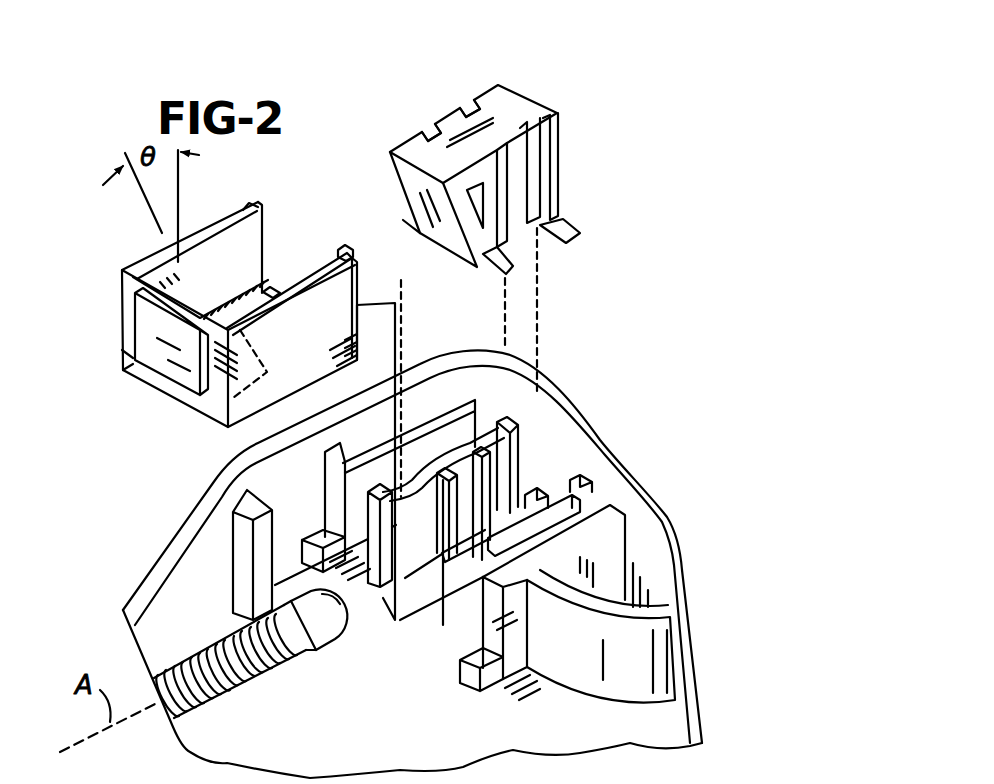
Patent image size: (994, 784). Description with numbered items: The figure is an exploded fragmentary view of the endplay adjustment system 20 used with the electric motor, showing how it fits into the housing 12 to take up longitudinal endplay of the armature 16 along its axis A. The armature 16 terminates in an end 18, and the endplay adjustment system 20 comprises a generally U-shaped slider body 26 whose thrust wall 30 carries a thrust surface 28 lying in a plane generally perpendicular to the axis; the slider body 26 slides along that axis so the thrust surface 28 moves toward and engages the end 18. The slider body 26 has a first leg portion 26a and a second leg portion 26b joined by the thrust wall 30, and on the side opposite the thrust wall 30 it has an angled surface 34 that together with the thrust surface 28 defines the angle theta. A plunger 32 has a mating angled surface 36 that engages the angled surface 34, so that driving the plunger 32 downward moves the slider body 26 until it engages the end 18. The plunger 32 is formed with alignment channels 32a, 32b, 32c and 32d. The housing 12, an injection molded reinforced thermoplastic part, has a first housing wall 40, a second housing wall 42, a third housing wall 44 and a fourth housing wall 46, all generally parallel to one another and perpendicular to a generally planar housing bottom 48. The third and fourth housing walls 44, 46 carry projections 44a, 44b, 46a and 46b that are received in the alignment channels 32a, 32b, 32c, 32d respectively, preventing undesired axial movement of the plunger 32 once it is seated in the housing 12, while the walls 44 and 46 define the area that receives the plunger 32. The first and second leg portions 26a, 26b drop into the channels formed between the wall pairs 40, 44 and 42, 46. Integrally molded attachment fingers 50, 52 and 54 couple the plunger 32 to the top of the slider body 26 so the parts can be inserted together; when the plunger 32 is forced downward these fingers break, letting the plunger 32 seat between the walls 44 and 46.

The housing 12 is at (683, 573).
The armature 16 is at (212, 660).
The end 18 is at (326, 634).
The endplay adjustment system 20 is at (346, 136).
The slider body 26 is at (354, 298).
The first leg portion 26a is at (258, 212).
The second leg portion 26b is at (338, 248).
The thrust surface 28 is at (167, 372).
The thrust wall 30 is at (135, 278).
The plunger 32 is at (567, 111).
The alignment channel 32a is at (480, 103).
The alignment channel 32b is at (446, 118).
The alignment channel 32c is at (503, 157).
The alignment channel 32d is at (531, 127).
The angled surface 34 is at (197, 268).
The angled surface 36 is at (414, 180).
The first housing wall 40 is at (437, 378).
The second housing wall 42 is at (614, 506).
The third housing wall 44 is at (505, 430).
The projection 44a is at (445, 497).
The projection 44b is at (506, 518).
The fourth housing wall 46 is at (577, 497).
The projection 46a is at (537, 490).
The projection 46b is at (587, 478).
The housing bottom 48 is at (446, 742).
The attachment finger 50 is at (576, 232).
The attachment finger 52 is at (516, 272).
The attachment finger 54 is at (408, 212).